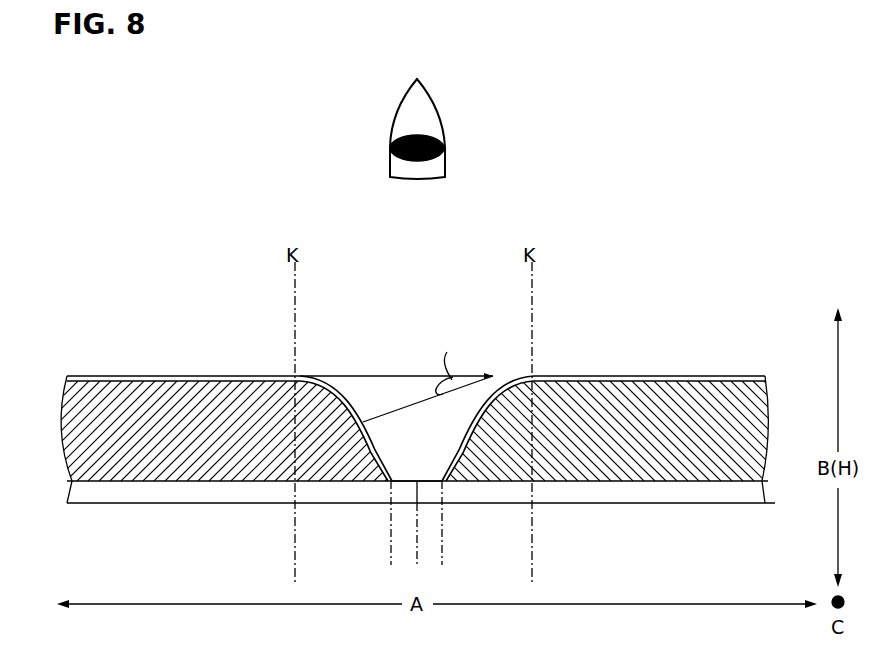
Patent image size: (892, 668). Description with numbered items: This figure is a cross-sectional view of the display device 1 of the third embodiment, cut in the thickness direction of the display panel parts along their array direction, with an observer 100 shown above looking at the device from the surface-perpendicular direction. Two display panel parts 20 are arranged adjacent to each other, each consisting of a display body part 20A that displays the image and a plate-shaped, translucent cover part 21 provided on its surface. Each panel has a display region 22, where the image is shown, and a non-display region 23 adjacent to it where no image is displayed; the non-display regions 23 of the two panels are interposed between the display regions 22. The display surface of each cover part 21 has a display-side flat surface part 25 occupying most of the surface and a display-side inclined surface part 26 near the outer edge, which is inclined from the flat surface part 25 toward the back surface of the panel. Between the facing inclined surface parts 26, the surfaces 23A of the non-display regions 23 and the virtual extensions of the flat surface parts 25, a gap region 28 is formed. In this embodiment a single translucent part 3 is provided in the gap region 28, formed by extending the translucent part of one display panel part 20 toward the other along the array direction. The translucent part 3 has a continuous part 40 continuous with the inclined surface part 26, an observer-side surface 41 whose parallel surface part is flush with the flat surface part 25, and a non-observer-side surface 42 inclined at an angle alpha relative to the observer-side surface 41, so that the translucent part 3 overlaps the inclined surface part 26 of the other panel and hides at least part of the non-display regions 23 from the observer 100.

The observer 100 is at (390, 151).
The display device 1 is at (640, 276).
The display panel part 20 is at (46, 376).
The display body part 20A is at (437, 431).
The cover part 21 is at (192, 376).
The display-side flat surface part 25 is at (127, 376).
The continuous part 40 is at (324, 378).
The observer-side surface 41 is at (343, 378).
The non-observer-side surface 42 is at (413, 405).
The translucent part 3 is at (396, 388).
The gap region 28 is at (417, 447).
The display-side inclined surface part 26 is at (449, 460).
The non-display region 23 is at (444, 512).
The surface of the non-display region 23A is at (568, 544).
The display region 22 is at (75, 544).